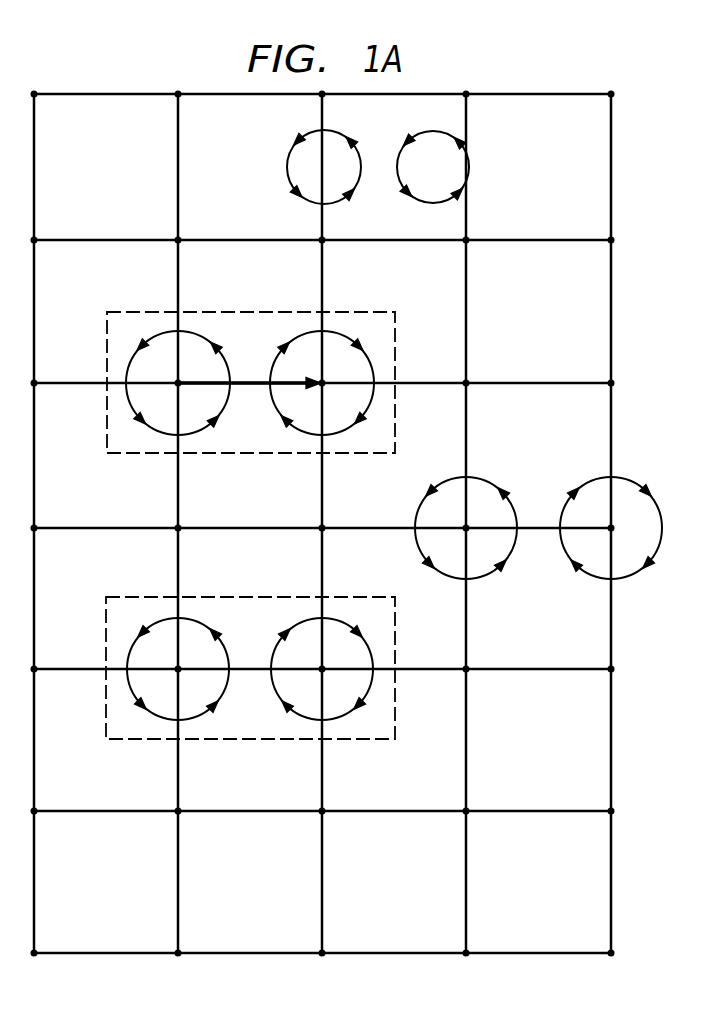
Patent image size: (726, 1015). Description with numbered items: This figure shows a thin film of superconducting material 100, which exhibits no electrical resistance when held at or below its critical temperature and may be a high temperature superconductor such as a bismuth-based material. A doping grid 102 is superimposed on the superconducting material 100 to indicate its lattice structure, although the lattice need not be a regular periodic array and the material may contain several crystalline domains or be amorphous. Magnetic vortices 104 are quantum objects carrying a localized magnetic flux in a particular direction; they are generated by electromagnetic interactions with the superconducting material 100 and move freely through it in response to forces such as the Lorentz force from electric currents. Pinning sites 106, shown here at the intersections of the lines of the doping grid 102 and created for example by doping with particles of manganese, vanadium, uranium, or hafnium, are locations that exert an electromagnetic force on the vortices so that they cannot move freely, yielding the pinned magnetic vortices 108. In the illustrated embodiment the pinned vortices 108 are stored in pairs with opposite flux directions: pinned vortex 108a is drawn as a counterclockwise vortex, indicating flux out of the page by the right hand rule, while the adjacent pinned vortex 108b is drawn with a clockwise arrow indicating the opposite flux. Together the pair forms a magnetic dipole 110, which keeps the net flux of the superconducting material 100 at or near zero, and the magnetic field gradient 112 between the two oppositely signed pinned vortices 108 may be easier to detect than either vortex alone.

The superconducting material 100 is at (356, 485).
The doping grid 102 is at (614, 168).
The magnetic vortices 104 is at (287, 172).
The pinning sites 106 is at (609, 243).
The pinned magnetic vortices 108 is at (150, 630).
The pinned vortex 108a is at (148, 345).
The pinned vortex 108b is at (356, 346).
The magnetic dipole 110 is at (252, 312).
The magnetic field gradient 112 is at (253, 380).